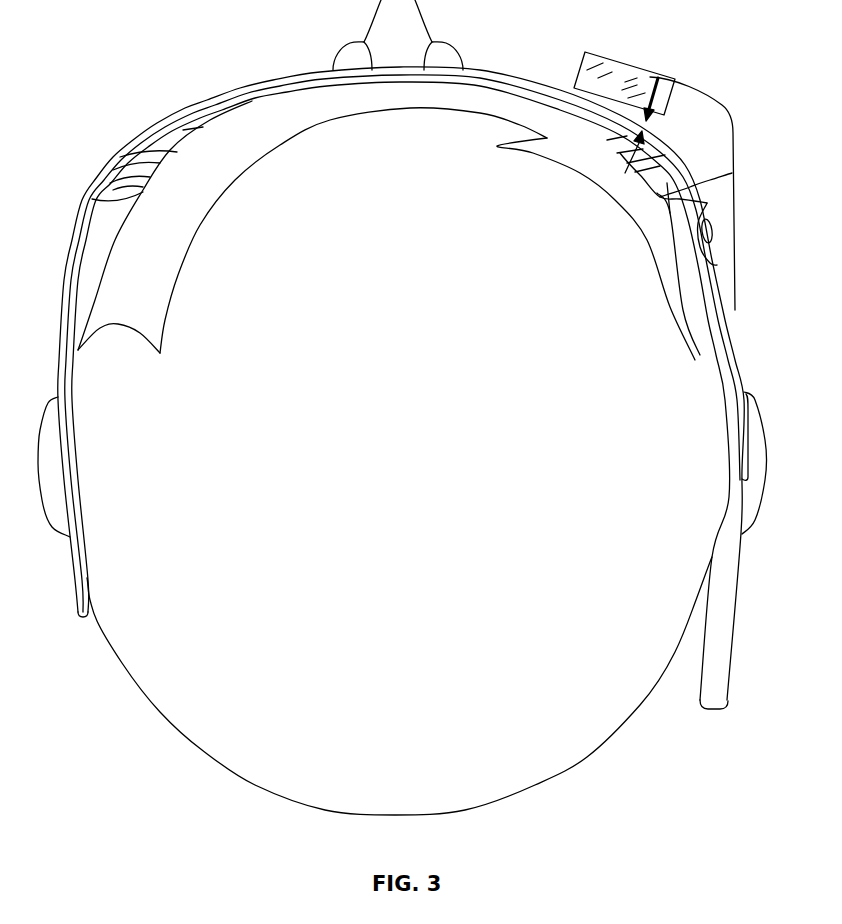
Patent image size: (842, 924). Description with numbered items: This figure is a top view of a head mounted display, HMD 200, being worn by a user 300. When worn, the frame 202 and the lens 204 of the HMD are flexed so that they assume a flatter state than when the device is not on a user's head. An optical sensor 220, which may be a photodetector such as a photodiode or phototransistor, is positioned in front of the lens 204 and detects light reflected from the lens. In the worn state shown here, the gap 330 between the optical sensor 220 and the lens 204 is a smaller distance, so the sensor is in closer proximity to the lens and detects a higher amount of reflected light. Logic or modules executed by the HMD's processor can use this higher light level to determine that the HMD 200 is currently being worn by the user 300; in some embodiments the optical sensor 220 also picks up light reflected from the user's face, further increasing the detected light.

The head mounted display 200 is at (55, 227).
The frame 202 is at (185, 108).
The lens 204 is at (713, 257).
The optical sensor 220 is at (657, 123).
The user 300 is at (444, 770).
The gap 330 is at (666, 77).